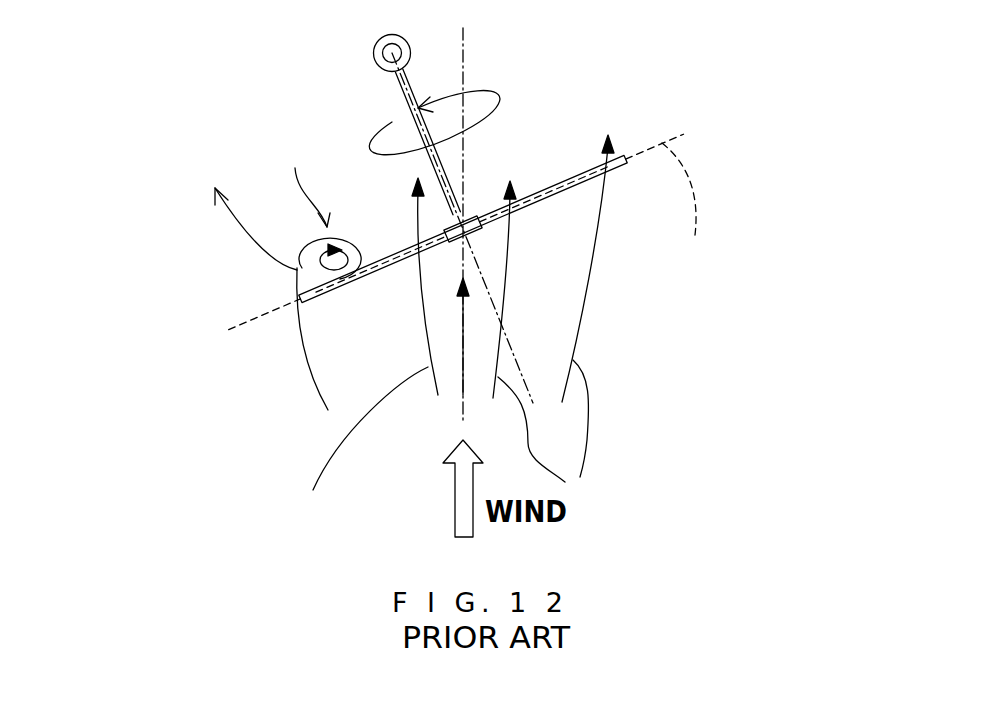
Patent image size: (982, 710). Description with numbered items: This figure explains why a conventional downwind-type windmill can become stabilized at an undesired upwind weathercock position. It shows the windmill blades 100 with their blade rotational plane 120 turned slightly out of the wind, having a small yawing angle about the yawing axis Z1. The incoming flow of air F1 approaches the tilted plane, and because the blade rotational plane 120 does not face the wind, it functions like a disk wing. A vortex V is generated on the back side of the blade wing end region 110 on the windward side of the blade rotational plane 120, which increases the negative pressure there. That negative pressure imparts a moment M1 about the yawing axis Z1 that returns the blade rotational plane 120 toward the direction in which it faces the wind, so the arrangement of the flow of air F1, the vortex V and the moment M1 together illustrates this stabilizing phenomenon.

The windmill blades 100 is at (573, 178).
The blade wing end region 110 is at (333, 297).
The blade rotational plane 120 is at (698, 213).
The yawing axis Z1 is at (392, 53).
The moment M1 is at (253, 242).
The vortex V is at (302, 181).
The flow of air F1 is at (317, 387).